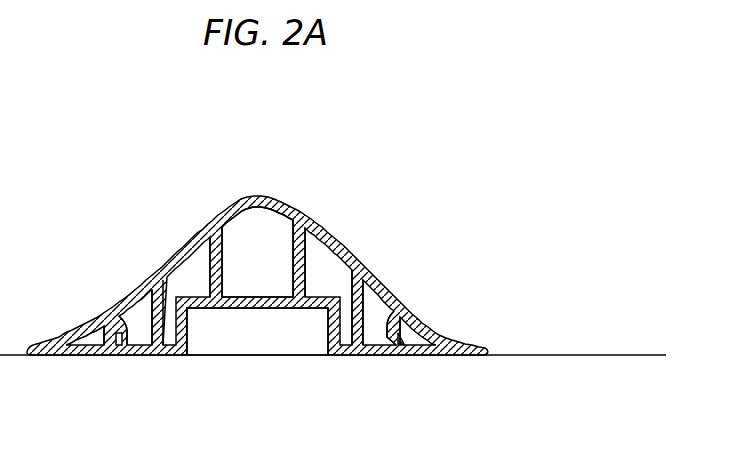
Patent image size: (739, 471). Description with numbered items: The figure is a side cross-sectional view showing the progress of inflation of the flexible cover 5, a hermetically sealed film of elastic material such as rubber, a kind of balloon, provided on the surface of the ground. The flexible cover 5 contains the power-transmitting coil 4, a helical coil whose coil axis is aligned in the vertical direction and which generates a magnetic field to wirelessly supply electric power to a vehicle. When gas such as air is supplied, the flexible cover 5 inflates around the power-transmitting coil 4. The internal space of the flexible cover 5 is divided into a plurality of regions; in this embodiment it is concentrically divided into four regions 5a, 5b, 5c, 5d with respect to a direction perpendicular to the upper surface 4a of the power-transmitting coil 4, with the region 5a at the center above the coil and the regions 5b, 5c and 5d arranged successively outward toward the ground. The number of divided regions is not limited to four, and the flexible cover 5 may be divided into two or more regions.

The flexible cover 5 is at (394, 157).
The region 5a is at (258, 238).
The region 5b is at (193, 268).
The region 5c is at (142, 318).
The region 5d is at (102, 335).
The power-transmitting coil 4 is at (225, 337).
The upper surface 4a is at (243, 305).